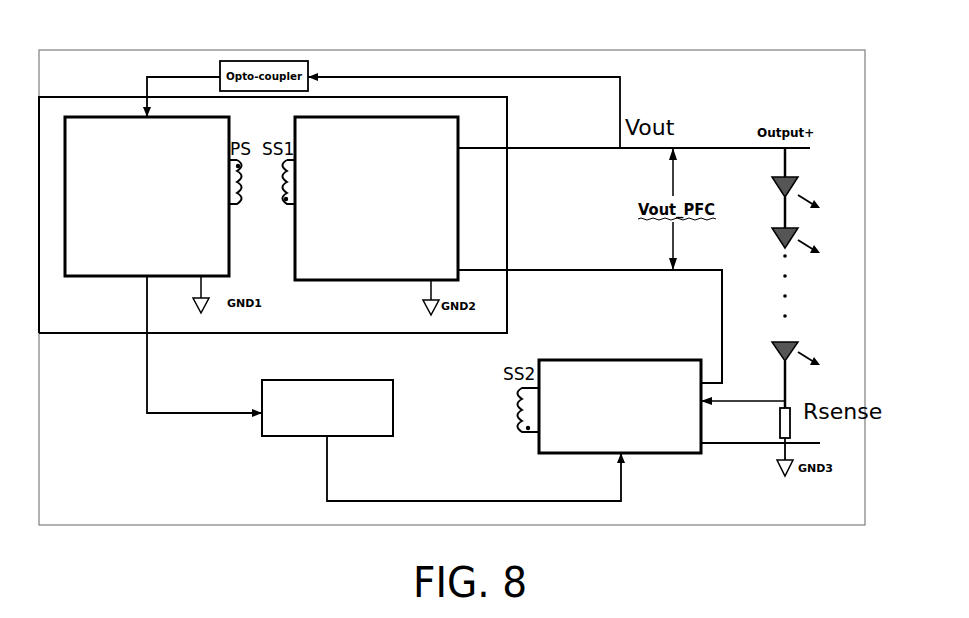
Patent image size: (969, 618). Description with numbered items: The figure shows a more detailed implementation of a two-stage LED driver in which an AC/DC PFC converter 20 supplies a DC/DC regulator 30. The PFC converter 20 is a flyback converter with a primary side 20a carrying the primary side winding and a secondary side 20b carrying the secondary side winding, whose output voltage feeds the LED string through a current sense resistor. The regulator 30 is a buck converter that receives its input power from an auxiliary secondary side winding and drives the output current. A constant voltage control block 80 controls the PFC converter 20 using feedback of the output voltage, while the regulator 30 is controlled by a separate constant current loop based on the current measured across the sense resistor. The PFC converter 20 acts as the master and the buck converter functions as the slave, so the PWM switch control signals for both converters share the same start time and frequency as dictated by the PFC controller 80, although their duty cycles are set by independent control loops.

The PFC converter 20 is at (91, 97).
The primary side 20a is at (110, 272).
The secondary side 20b is at (405, 117).
The regulator 30 is at (611, 360).
The constant voltage control block 80 is at (393, 408).